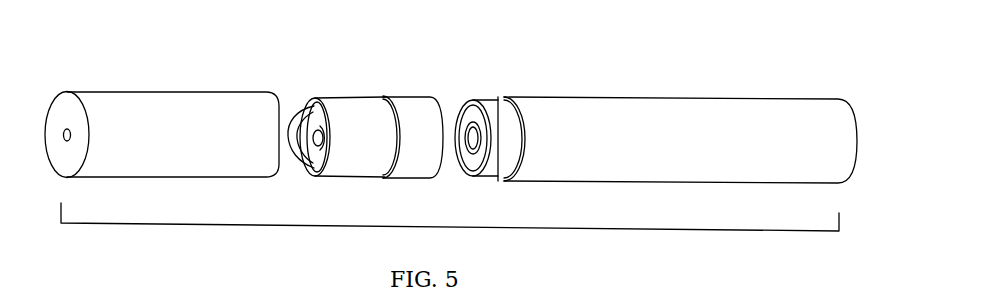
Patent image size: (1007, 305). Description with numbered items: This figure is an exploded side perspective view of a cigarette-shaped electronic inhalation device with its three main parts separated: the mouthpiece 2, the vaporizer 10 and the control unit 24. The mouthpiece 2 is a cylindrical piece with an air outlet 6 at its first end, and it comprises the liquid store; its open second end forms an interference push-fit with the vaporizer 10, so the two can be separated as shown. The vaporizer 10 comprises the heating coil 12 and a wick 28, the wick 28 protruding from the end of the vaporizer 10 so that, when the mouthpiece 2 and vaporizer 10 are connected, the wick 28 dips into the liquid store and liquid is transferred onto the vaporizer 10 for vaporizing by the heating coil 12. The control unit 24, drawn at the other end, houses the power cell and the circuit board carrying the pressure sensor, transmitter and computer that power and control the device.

The mouthpiece 2 is at (184, 117).
The air outlet 6 is at (63, 132).
The vaporizer 10 is at (363, 115).
The wick 28 is at (297, 125).
The heating coil 12 is at (318, 152).
The control unit 24 is at (670, 123).